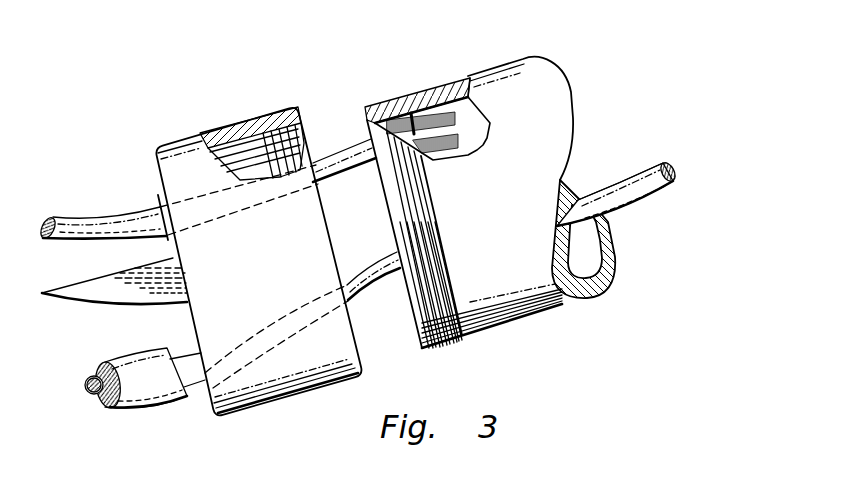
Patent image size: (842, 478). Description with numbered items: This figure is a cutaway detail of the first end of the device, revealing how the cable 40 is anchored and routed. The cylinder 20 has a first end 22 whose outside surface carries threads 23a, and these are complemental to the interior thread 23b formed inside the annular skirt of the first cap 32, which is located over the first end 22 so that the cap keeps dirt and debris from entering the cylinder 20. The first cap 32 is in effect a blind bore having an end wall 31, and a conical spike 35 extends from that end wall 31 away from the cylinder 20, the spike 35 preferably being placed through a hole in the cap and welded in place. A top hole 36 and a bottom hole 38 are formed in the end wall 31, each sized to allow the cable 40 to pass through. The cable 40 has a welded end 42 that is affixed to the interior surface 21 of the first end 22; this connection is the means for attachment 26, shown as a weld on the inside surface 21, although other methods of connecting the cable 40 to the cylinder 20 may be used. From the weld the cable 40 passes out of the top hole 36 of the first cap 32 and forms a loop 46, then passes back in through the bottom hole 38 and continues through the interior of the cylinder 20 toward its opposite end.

The cylinder 20 is at (522, 60).
The interior surface 21 is at (580, 257).
The first end 22 is at (422, 330).
The threads 23a is at (458, 288).
The interior thread 23b is at (268, 113).
The means for attachment 26 is at (441, 112).
The end wall 31 is at (214, 411).
The first cap 32 is at (178, 135).
The conical spike 35 is at (100, 297).
The top hole 36 is at (160, 207).
The bottom hole 38 is at (203, 383).
The cable 40 is at (625, 182).
The welded end 42 is at (405, 115).
The loop 46 is at (83, 245).